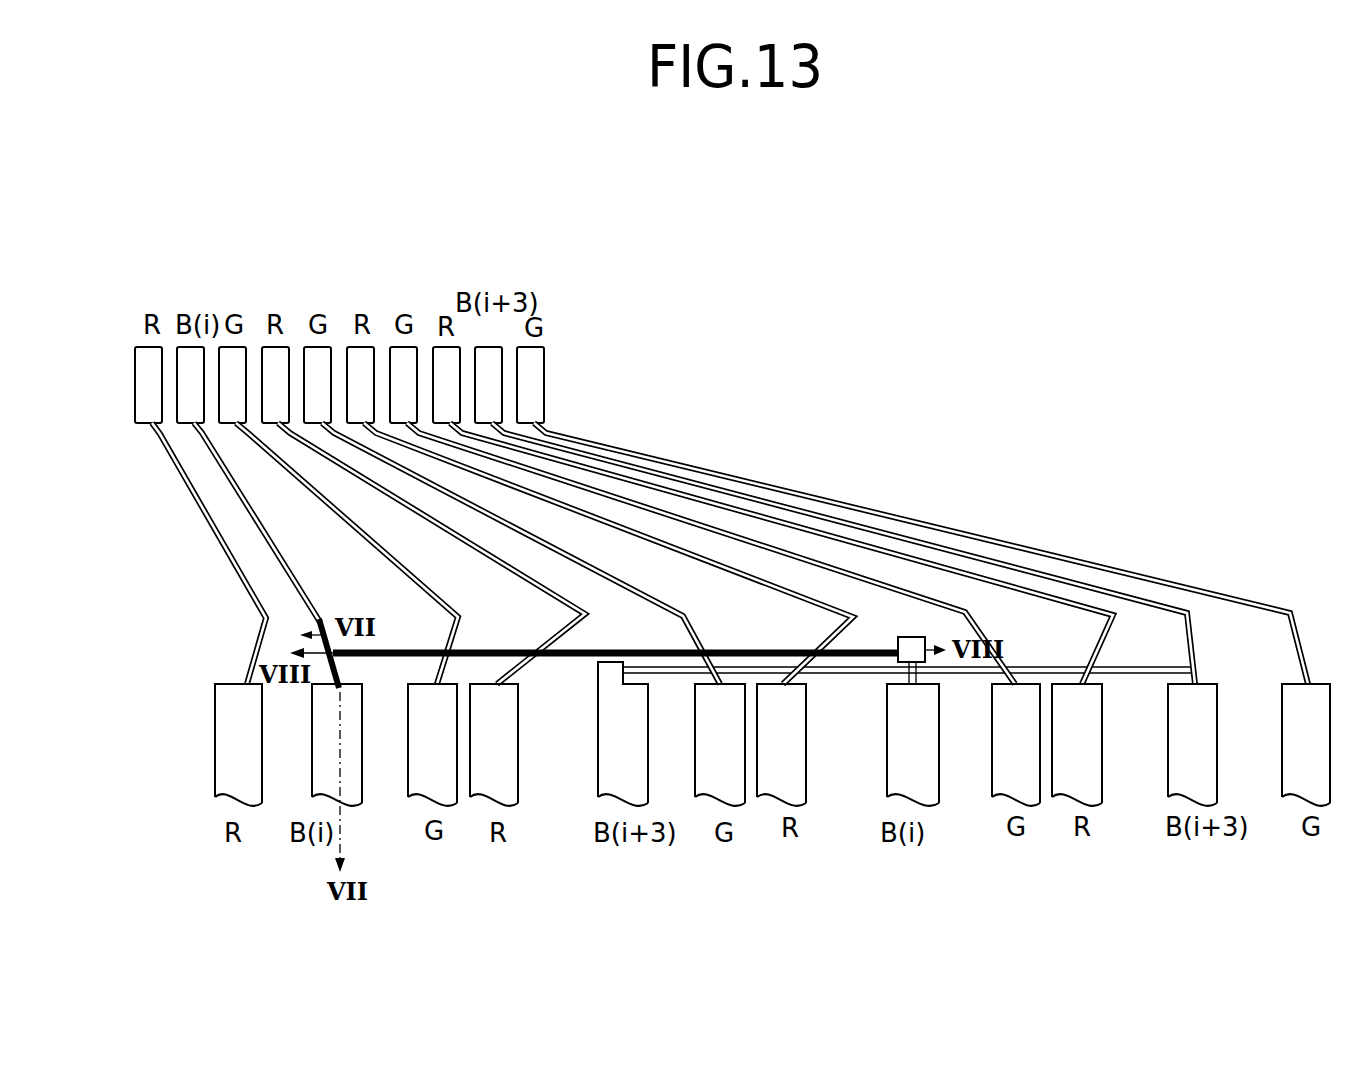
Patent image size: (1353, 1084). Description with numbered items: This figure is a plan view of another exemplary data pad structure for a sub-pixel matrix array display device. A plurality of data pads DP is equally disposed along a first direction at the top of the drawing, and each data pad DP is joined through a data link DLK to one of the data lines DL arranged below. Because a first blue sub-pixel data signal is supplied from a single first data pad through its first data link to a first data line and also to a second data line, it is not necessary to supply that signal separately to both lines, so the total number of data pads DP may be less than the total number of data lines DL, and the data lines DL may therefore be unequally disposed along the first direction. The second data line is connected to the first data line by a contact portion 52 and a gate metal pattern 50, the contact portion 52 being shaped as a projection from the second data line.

The data pad DP is at (135, 385).
The data link DLK is at (230, 563).
The data line DL is at (215, 745).
The gate metal pattern 50 is at (498, 652).
The contact portion 52 is at (620, 662).